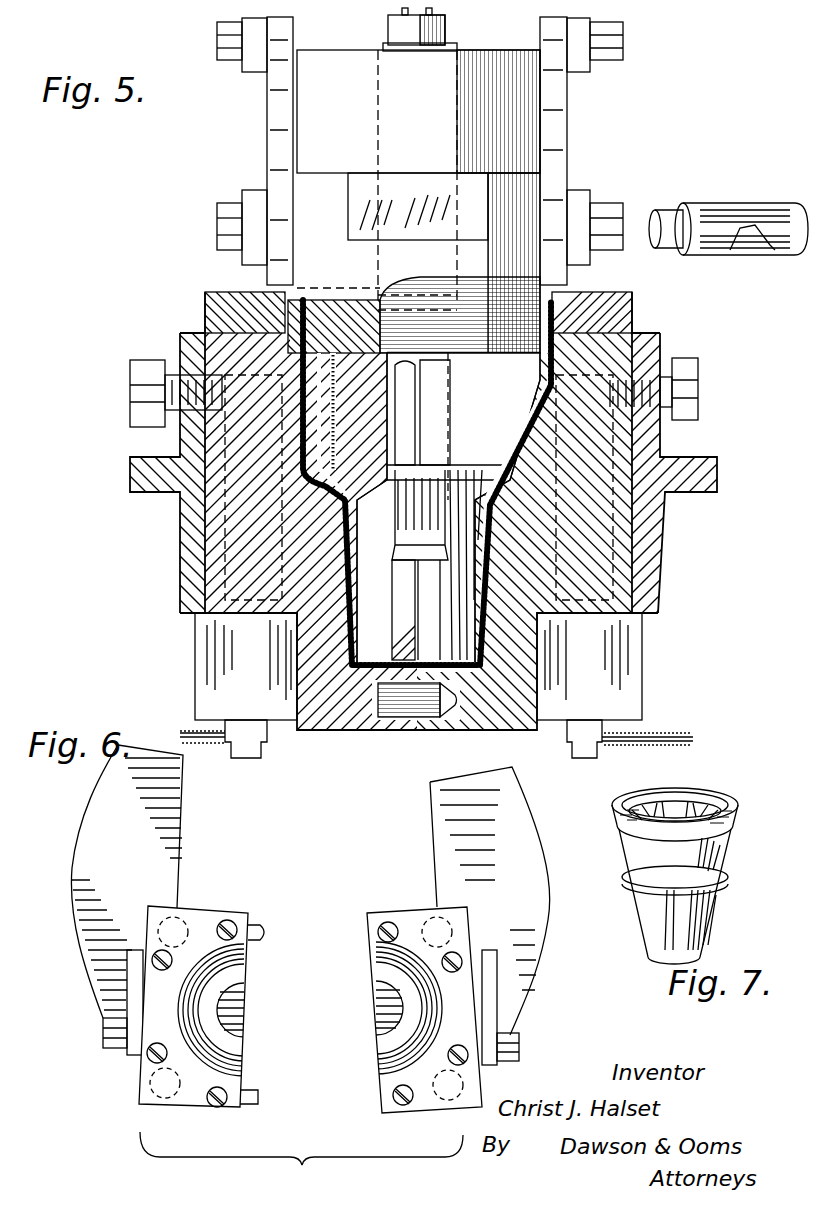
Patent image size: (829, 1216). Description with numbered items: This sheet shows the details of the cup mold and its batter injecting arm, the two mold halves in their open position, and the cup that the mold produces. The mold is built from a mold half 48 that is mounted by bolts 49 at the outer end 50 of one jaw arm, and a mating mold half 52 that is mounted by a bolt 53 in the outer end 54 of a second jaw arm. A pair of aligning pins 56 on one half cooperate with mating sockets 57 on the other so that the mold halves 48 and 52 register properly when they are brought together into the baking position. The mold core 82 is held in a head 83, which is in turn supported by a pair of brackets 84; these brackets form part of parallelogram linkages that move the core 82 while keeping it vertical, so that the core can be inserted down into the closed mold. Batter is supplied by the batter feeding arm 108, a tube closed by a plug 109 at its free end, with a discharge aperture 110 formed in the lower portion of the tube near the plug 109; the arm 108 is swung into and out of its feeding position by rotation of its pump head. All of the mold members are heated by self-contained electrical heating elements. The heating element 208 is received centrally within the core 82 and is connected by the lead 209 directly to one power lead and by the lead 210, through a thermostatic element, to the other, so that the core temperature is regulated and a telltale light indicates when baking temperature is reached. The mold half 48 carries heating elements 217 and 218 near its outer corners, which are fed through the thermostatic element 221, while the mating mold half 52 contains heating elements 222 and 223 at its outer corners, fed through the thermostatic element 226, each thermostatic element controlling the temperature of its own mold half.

In FIG. 5, the mold half 48 is at (205, 300).
In FIG. 6, the mold half 48 is at (140, 1077).
In FIG. 5, the bolts 49 is at (132, 395).
In FIG. 6, the bolts 49 is at (103, 1030).
In FIG. 5, the outer end of jaw arm 50 is at (175, 545).
In FIG. 6, the outer end of jaw arm 50 is at (100, 977).
In FIG. 5, the mating mold half 52 is at (632, 306).
In FIG. 6, the mating mold half 52 is at (426, 1110).
In FIG. 5, the bolt 53 is at (699, 390).
In FIG. 6, the bolt 53 is at (517, 1045).
In FIG. 5, the outer end of second jaw arm 54 is at (660, 540).
In FIG. 6, the outer end of second jaw arm 54 is at (533, 975).
In FIG. 5, the aligning pins 56 is at (428, 715).
In FIG. 6, the aligning pins 56 is at (260, 926).
In FIG. 5, the mating sockets 57 is at (474, 716).
In FIG. 5, the mold core 82 is at (322, 301).
In FIG. 5, the head 83 is at (530, 192).
In FIG. 5, the brackets 84 is at (278, 137).
In FIG. 5, the batter feeding arm 108 is at (750, 204).
In FIG. 5, the plug 109 is at (677, 214).
In FIG. 5, the discharge aperture 110 is at (687, 353).
In FIG. 5, the heating element 208 is at (382, 330).
In FIG. 5, the lead 209 is at (445, 12).
In FIG. 5, the lead 210 is at (400, 12).
In FIG. 6, the heating element 217 is at (163, 1085).
In FIG. 5, the heating element 218 is at (235, 578).
In FIG. 6, the heating element 218 is at (173, 932).
In FIG. 5, the thermostatic element 221 is at (195, 667).
In FIG. 6, the heating element 222 is at (452, 1085).
In FIG. 5, the heating element 223 is at (600, 455).
In FIG. 6, the heating element 223 is at (440, 930).
In FIG. 5, the thermostatic element 226 is at (642, 668).